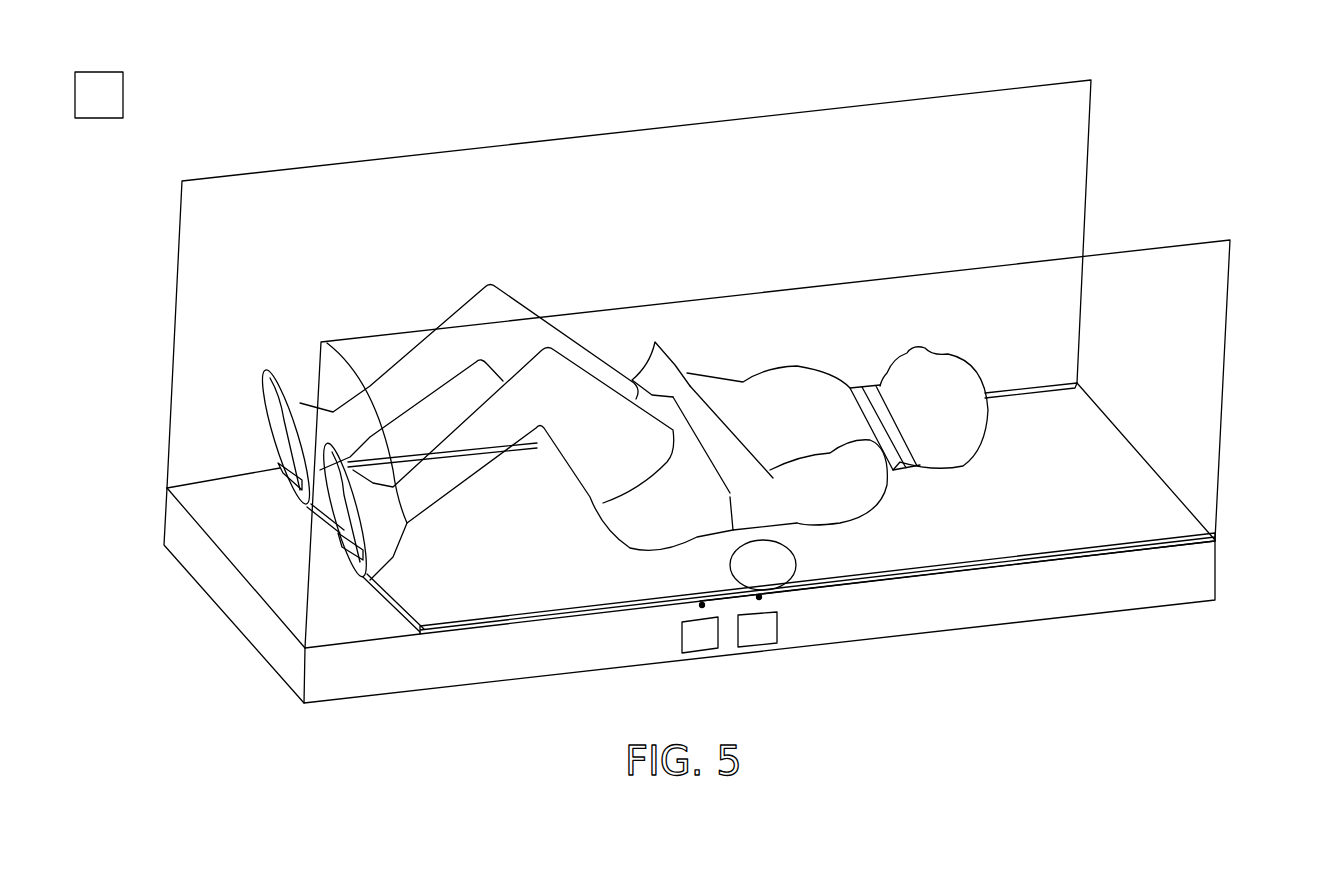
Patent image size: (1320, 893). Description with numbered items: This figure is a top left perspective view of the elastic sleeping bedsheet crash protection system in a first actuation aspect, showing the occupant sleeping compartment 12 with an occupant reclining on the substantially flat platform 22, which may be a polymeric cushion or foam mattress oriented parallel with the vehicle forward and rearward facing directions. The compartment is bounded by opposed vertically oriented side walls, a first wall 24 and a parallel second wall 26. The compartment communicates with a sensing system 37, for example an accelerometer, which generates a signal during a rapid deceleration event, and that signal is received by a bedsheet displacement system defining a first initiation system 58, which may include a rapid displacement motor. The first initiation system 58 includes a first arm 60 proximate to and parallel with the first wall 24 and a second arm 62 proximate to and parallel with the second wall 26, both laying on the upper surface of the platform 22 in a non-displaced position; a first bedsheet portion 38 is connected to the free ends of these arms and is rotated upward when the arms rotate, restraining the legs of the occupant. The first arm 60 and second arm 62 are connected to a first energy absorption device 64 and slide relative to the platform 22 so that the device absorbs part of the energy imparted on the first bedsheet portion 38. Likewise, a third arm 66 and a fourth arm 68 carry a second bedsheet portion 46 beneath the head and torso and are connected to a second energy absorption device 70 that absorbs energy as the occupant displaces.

The occupant sleeping compartment 12 is at (730, 377).
The platform 22 is at (689, 526).
The first wall 24 is at (1040, 100).
The second wall 26 is at (1207, 268).
The sensing system 37 is at (113, 107).
The first bedsheet portion 38 is at (430, 600).
The second bedsheet portion 46 is at (1107, 480).
The first initiation system 58 is at (777, 577).
The first arm 60 is at (321, 342).
The second arm 62 is at (468, 633).
The first energy absorption device 64 is at (702, 605).
The third arm 66 is at (1028, 388).
The fourth arm 68 is at (918, 583).
The second energy absorption device 70 is at (759, 598).